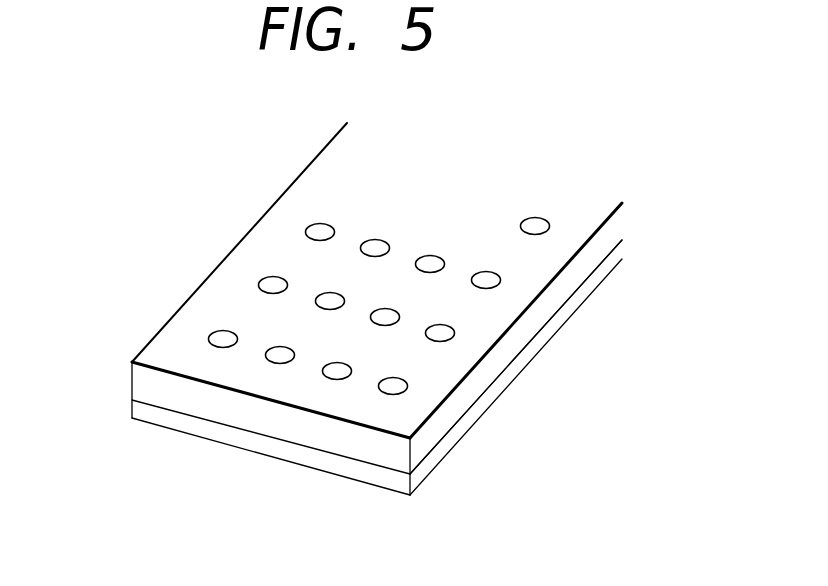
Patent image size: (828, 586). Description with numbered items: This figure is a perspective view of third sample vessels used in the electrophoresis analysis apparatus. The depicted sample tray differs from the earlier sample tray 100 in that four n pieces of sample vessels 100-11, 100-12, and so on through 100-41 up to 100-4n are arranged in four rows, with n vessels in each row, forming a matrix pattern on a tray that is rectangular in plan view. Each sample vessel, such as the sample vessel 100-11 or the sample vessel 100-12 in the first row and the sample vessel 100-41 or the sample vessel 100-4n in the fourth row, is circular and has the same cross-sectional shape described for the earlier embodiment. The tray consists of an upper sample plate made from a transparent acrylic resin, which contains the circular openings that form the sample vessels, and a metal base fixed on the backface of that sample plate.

The sample tray 100 is at (343, 465).
The sample vessel 100-11 is at (223, 340).
The sample vessel 100-12 is at (273, 285).
The sample vessel 100-41 is at (393, 386).
The sample vessel 100-4n is at (535, 228).